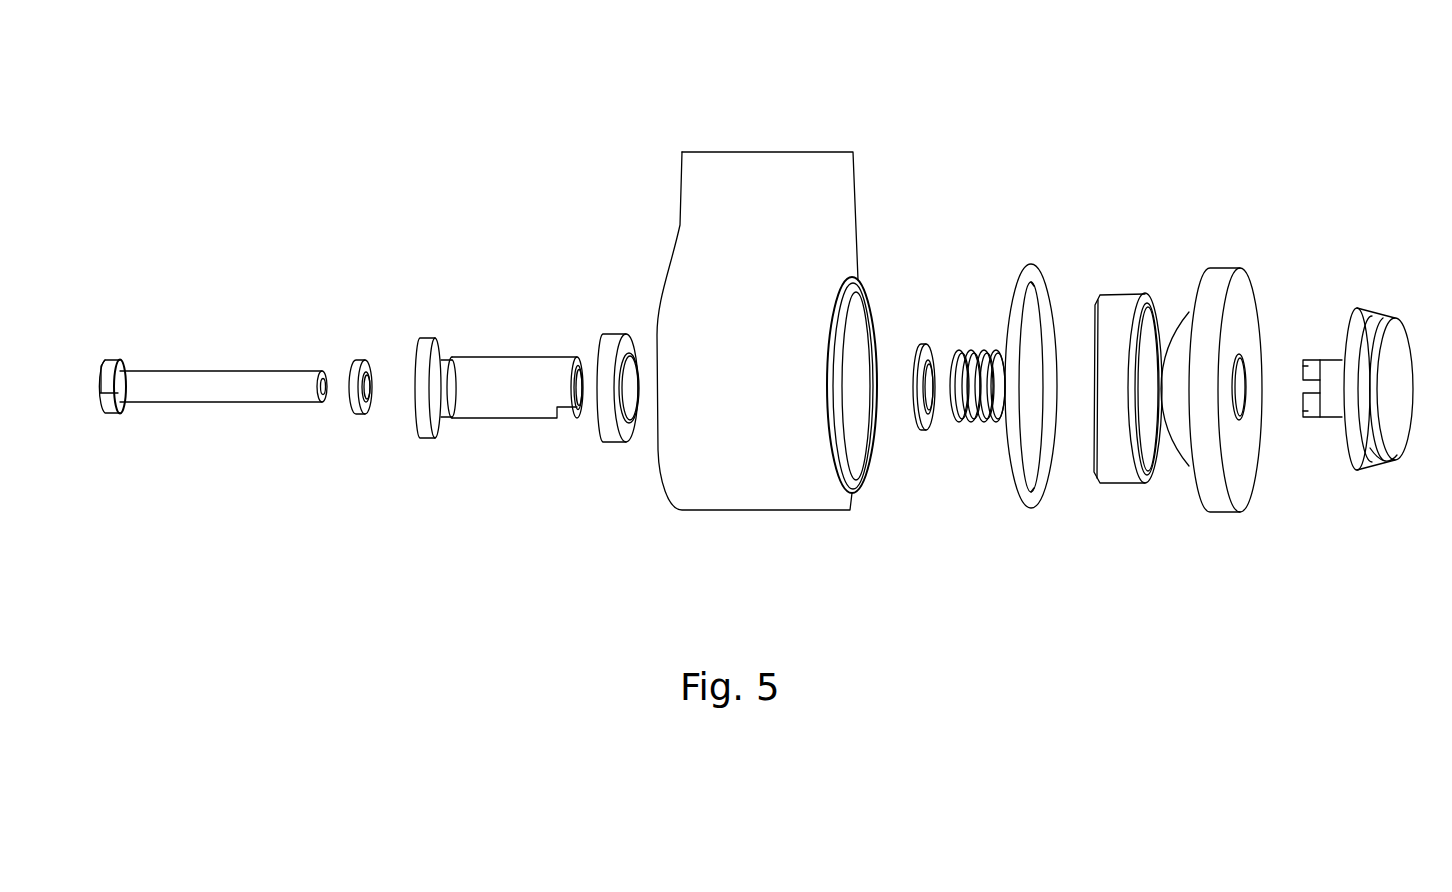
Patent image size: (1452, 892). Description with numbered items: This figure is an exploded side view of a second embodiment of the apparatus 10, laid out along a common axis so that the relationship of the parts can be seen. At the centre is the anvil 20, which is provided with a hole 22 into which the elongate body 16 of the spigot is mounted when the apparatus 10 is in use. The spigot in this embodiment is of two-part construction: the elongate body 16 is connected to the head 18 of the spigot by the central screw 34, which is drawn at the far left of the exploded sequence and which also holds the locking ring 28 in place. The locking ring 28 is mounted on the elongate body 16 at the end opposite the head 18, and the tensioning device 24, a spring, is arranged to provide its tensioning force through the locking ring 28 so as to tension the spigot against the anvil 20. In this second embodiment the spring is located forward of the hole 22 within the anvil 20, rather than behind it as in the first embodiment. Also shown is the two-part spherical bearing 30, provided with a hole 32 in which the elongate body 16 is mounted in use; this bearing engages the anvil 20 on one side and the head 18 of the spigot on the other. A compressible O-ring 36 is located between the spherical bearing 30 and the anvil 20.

The apparatus 10 is at (411, 161).
The elongate body 16 is at (523, 357).
The head 18 is at (1375, 323).
The anvil 20 is at (762, 177).
The hole 22 is at (870, 330).
The tensioning device 24 is at (968, 427).
The locking ring 28 is at (640, 430).
The two-part spherical bearing 30 is at (1120, 293).
The hole 32 is at (1254, 426).
The screw 34 is at (237, 378).
The compressible O-ring 36 is at (1030, 508).